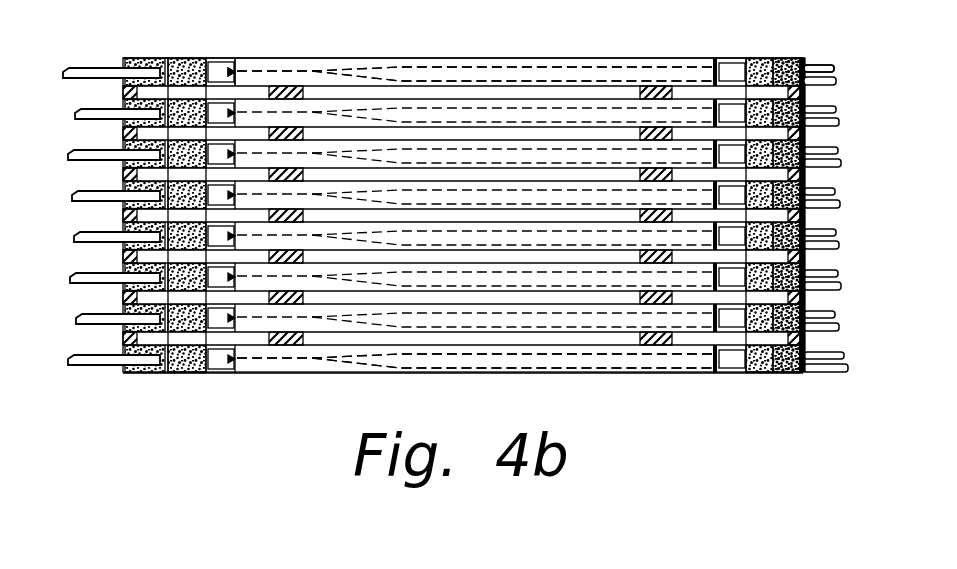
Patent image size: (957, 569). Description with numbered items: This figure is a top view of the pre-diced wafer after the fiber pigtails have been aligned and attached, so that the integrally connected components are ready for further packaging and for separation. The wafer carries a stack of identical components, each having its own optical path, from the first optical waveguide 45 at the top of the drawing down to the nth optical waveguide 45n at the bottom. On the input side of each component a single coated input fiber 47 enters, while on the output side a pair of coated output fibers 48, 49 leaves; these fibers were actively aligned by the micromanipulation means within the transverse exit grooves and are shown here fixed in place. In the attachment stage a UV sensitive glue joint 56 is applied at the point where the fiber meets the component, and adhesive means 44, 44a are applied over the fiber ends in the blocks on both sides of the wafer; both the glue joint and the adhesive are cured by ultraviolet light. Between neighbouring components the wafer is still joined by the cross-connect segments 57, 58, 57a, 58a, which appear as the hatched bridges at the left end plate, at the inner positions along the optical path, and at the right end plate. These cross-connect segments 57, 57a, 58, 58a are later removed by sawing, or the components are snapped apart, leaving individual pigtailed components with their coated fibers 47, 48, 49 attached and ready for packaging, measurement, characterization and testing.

The adhesive means 44 is at (757, 64).
The adhesive means 44a is at (185, 62).
The optical waveguide 45 is at (497, 68).
The nth optical waveguide 45n is at (475, 364).
The coated input fiber 47 is at (85, 67).
The coated output fiber 48 is at (818, 65).
The coated output fiber 49 is at (834, 69).
The UV sensitive glue joint 56 is at (233, 67).
The cross-connect segment 57 is at (803, 95).
The cross-connect segment 57a is at (122, 90).
The cross-connect segment 58 is at (652, 88).
The cross-connect segment 58a is at (285, 88).